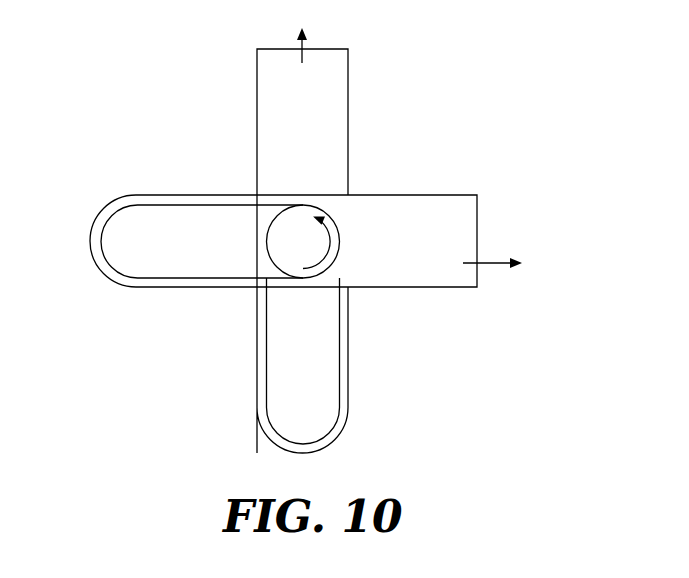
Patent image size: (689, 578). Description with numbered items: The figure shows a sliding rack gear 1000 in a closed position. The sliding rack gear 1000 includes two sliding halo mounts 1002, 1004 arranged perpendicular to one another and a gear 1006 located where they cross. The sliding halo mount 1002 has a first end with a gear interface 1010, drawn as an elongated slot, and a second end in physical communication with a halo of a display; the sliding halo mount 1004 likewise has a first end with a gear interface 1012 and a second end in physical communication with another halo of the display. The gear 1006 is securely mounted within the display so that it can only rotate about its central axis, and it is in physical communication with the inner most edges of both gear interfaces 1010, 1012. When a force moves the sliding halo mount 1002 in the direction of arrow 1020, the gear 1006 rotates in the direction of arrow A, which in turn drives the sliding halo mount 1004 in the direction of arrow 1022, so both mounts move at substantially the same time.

The sliding rack gear 1000 is at (493, 477).
The sliding halo mount 1002 is at (321, 143).
The sliding halo mount 1004 is at (463, 234).
The gear 1006 is at (303, 233).
The gear interface 1010 is at (282, 397).
The gear interface 1012 is at (118, 242).
The arrow 1020 is at (306, 34).
The arrow 1022 is at (517, 268).